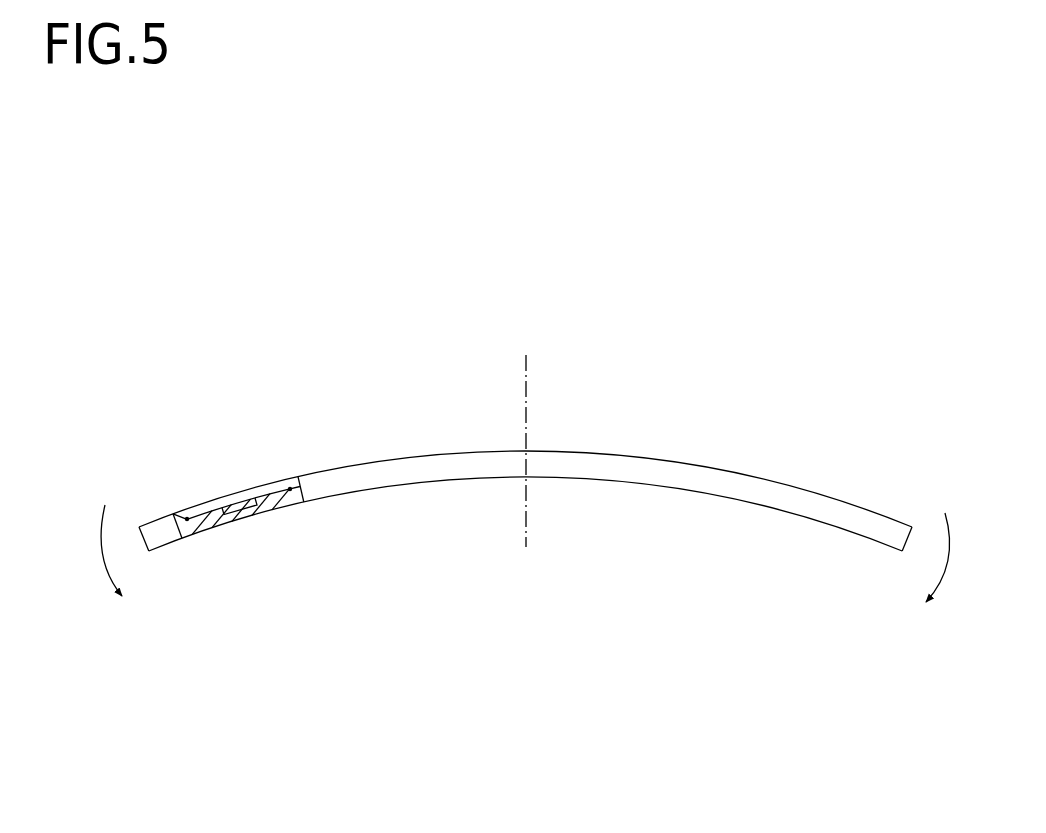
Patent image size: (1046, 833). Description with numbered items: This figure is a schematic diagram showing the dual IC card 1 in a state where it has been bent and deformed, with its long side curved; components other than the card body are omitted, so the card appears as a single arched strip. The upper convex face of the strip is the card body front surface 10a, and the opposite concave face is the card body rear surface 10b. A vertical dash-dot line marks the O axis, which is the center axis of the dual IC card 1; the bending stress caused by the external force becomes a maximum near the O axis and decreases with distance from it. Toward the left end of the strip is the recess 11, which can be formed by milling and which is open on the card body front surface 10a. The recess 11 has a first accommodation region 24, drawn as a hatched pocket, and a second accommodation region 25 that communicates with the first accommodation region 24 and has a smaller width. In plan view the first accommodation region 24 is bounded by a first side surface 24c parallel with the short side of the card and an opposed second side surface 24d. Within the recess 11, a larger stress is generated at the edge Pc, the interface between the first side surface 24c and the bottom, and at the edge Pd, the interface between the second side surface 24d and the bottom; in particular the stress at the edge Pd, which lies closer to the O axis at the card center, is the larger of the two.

The dual IC card 1 is at (525, 460).
The card body front surface 10a is at (671, 461).
The card body rear surface 10b is at (720, 497).
The O axis O is at (527, 410).
The recess 11 is at (255, 316).
The first accommodation region 24 is at (207, 499).
The second accommodation region 25 is at (243, 499).
The first side surface 24c is at (192, 511).
The second side surface 24d is at (290, 490).
The edge Pc is at (188, 522).
The edge Pd is at (289, 504).